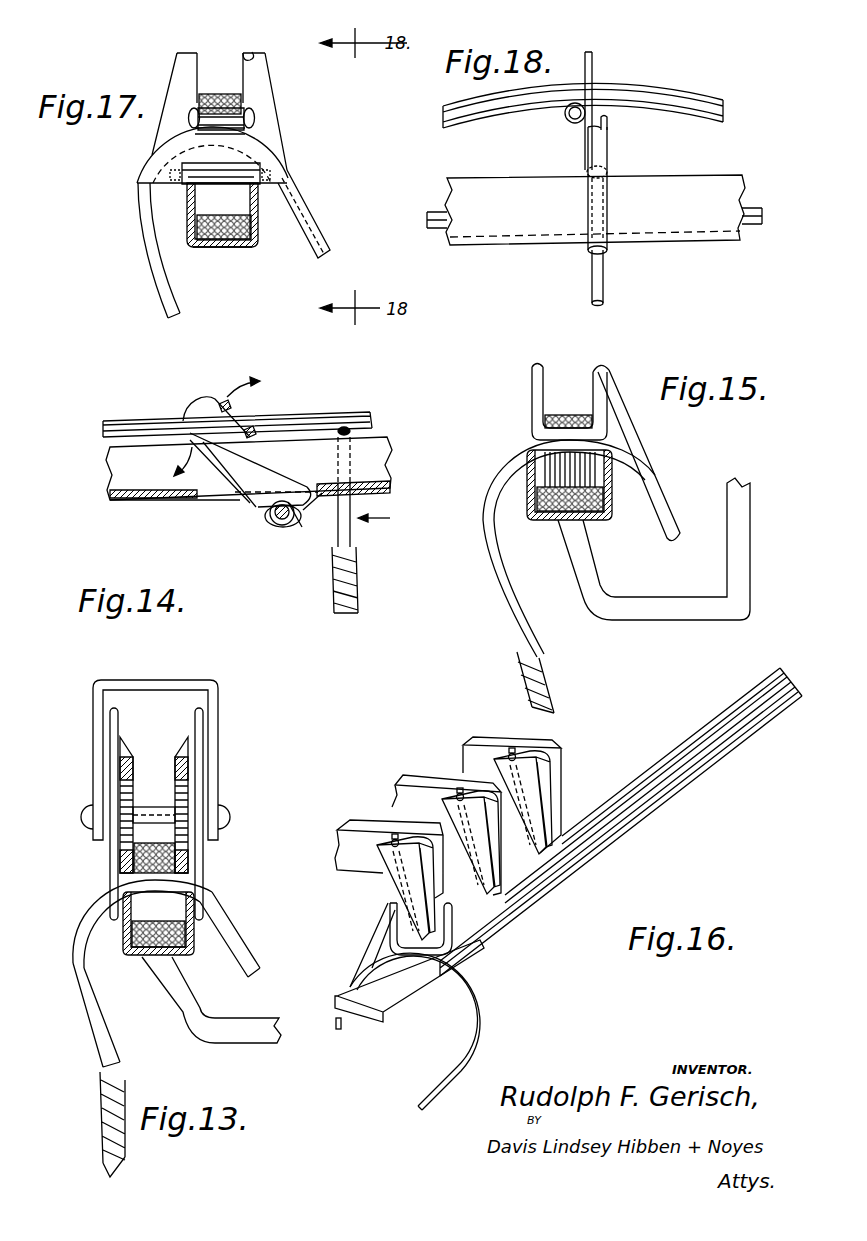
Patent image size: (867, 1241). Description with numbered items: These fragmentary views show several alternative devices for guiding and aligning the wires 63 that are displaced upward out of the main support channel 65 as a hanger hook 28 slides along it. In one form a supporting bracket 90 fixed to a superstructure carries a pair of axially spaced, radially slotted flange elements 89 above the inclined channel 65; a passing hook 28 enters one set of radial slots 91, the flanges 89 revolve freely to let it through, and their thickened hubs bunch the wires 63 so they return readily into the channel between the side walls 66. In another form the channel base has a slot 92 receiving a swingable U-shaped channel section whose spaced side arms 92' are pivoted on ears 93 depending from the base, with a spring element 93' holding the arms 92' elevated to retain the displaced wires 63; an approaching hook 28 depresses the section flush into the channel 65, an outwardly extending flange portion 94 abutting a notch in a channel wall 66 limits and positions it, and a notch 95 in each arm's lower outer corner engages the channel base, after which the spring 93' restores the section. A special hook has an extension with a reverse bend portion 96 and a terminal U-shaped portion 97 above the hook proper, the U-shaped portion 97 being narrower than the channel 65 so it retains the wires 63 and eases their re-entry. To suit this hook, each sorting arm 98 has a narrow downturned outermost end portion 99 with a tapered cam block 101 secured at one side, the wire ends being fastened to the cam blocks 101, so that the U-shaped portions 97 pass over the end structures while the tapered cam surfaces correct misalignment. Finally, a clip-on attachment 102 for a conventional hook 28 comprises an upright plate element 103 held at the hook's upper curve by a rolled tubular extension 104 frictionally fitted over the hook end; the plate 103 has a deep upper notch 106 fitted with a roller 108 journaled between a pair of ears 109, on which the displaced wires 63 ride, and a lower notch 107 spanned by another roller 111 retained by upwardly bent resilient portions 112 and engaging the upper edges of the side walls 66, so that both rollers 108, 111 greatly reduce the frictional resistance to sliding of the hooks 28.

In FIG. 17, the hook 28 is at (166, 293).
In FIG. 18, the hook 28 is at (600, 284).
In FIG. 14, the hook 28 is at (352, 526).
In FIG. 15, the hook 28 is at (507, 578).
In FIG. 13, the hook 28 is at (84, 984).
In FIG. 16, the hook 28 is at (484, 1050).
In FIG. 17, the wires 63 is at (243, 100).
In FIG. 18, the wires 63 is at (678, 100).
In FIG. 14, the wires 63 is at (304, 412).
In FIG. 15, the wires 63 is at (567, 413).
In FIG. 13, the wires 63 is at (195, 854).
In FIG. 16, the wires 63 is at (657, 792).
In FIG. 17, the main support channel 65 is at (207, 249).
In FIG. 14, the main support channel 65 is at (90, 472).
In FIG. 15, the main support channel 65 is at (598, 524).
In FIG. 13, the main support channel 65 is at (186, 960).
In FIG. 16, the main support channel 65 is at (572, 879).
In FIG. 17, the side walls of the channel 66 is at (190, 213).
In FIG. 18, the side walls of the channel 66 is at (707, 183).
In FIG. 14, the side walls of the channel 66 is at (110, 457).
In FIG. 15, the side walls of the channel 66 is at (527, 479).
In FIG. 13, the side walls of the channel 66 is at (123, 931).
In FIG. 13, the radially slotted flange elements 89 is at (176, 762).
In FIG. 13, the supporting bracket 90 is at (182, 683).
In FIG. 13, the radial slots 91 is at (108, 893).
In FIG. 14, the slot in the base of the channel 92 is at (204, 486).
In FIG. 14, the side arms of the swingable channel section 92' is at (250, 491).
In FIG. 14, the ears 93 is at (276, 537).
In FIG. 14, the spring element 93' is at (293, 523).
In FIG. 14, the flange portion 94 is at (232, 415).
In FIG. 14, the notch 95 is at (195, 452).
In FIG. 15, the reverse bend portion 96 is at (670, 530).
In FIG. 13, the reverse bend portion 96 is at (282, 1024).
In FIG. 16, the reverse bend portion 96 is at (335, 1024).
In FIG. 15, the terminal U-shaped portion 97 is at (532, 391).
In FIG. 16, the terminal U-shaped portion 97 is at (476, 946).
In FIG. 16, the sorting arm 98 is at (371, 828).
In FIG. 16, the downturned outermost end portion 99 is at (557, 809).
In FIG. 16, the tapered cam block 101 is at (529, 783).
In FIG. 17, the clip-on attachment 102 is at (283, 112).
In FIG. 18, the clip-on attachment 102 is at (600, 78).
In FIG. 17, the upright plate element 103 is at (275, 142).
In FIG. 18, the upright plate element 103 is at (588, 137).
In FIG. 17, the rolled tubular extension 104 is at (323, 214).
In FIG. 18, the rolled tubular extension 104 is at (608, 216).
In FIG. 17, the upper notch 106 is at (247, 56).
In FIG. 17, the lower notch 107 is at (203, 167).
In FIG. 17, the roller 108 is at (210, 97).
In FIG. 17, the ears 109 is at (256, 117).
In FIG. 18, the ears 109 is at (563, 118).
In FIG. 17, the roller 111 is at (217, 178).
In FIG. 18, the roller 111 is at (595, 188).
In FIG. 18, the resilient portions 112 is at (608, 148).